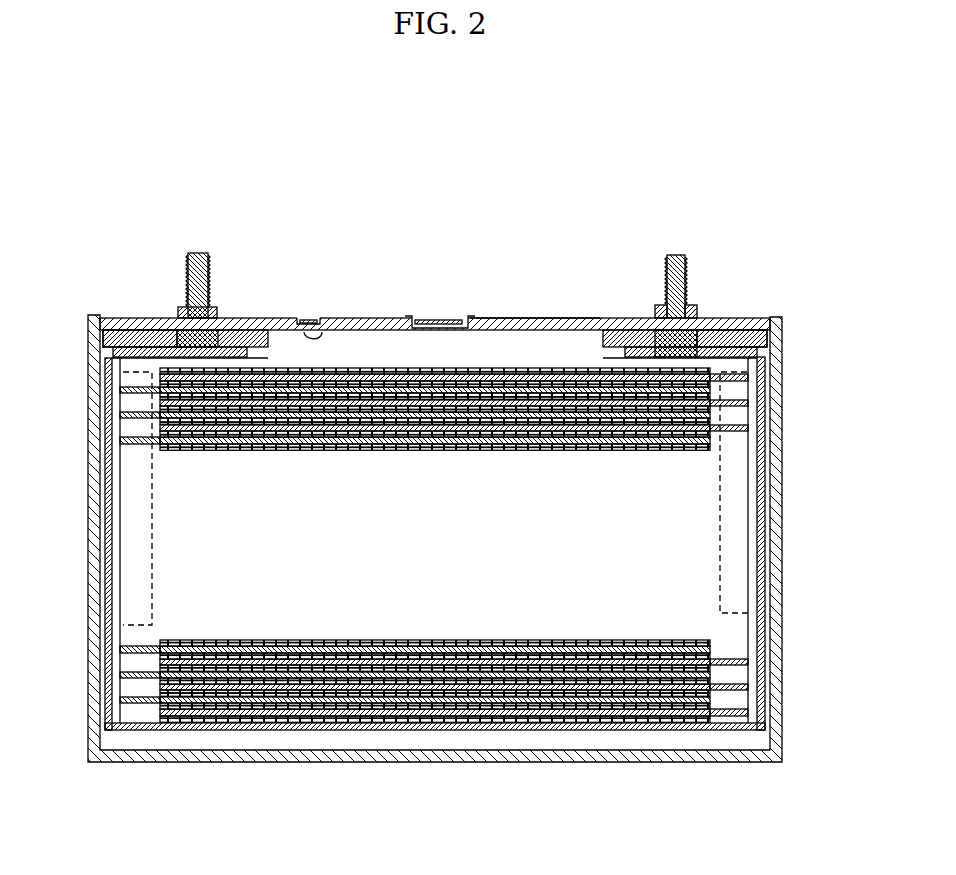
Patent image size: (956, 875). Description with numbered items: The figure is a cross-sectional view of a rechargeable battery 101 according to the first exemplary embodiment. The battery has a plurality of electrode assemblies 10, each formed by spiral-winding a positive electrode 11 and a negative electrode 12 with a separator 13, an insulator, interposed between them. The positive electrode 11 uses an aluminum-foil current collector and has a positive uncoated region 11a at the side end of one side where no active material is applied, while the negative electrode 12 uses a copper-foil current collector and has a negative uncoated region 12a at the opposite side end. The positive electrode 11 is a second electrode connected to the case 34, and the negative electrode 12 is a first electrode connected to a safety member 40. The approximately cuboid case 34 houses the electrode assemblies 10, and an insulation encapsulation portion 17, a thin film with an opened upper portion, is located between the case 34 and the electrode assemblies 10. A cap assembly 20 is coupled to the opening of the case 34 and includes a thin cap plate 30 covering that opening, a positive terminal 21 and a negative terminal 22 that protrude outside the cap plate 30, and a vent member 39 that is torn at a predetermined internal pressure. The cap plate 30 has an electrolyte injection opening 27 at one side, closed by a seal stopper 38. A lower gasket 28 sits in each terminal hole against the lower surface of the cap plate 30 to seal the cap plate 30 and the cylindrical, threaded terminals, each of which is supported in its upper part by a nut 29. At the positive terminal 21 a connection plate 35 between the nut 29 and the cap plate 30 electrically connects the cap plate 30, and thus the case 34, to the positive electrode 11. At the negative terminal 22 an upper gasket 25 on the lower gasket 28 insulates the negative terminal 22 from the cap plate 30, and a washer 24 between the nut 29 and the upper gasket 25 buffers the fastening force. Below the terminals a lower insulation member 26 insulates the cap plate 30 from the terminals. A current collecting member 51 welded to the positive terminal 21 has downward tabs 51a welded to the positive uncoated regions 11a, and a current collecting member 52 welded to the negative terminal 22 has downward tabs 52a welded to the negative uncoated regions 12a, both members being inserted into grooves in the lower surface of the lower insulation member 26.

The rechargeable battery 101 is at (455, 163).
The electrode assembly 10 is at (552, 612).
The positive electrode 11 is at (260, 715).
The positive uncoated region 11a is at (138, 725).
The negative electrode 12 is at (312, 700).
The negative uncoated region 12a is at (730, 715).
The separator 13 is at (433, 695).
The insulation encapsulation portion 17 is at (205, 727).
The cap assembly 20 is at (252, 316).
The positive terminal 21 is at (198, 253).
The negative terminal 22 is at (667, 270).
The washer 24 is at (660, 320).
The upper gasket 25 is at (697, 330).
The lower insulation member 26 is at (113, 345).
The electrolyte injection opening 27 is at (306, 336).
The lower gasket 28 is at (177, 325).
The nut 29 is at (182, 307).
The cap plate 30 is at (492, 325).
The case 34 is at (775, 498).
The connection plate 35 is at (177, 317).
The seal stopper 38 is at (300, 318).
The vent member 39 is at (445, 320).
The safety member 40 is at (756, 626).
The current collecting member 51 is at (108, 359).
The tabs 51a is at (130, 484).
The current collecting member 52 is at (760, 362).
The tabs 52a is at (738, 450).